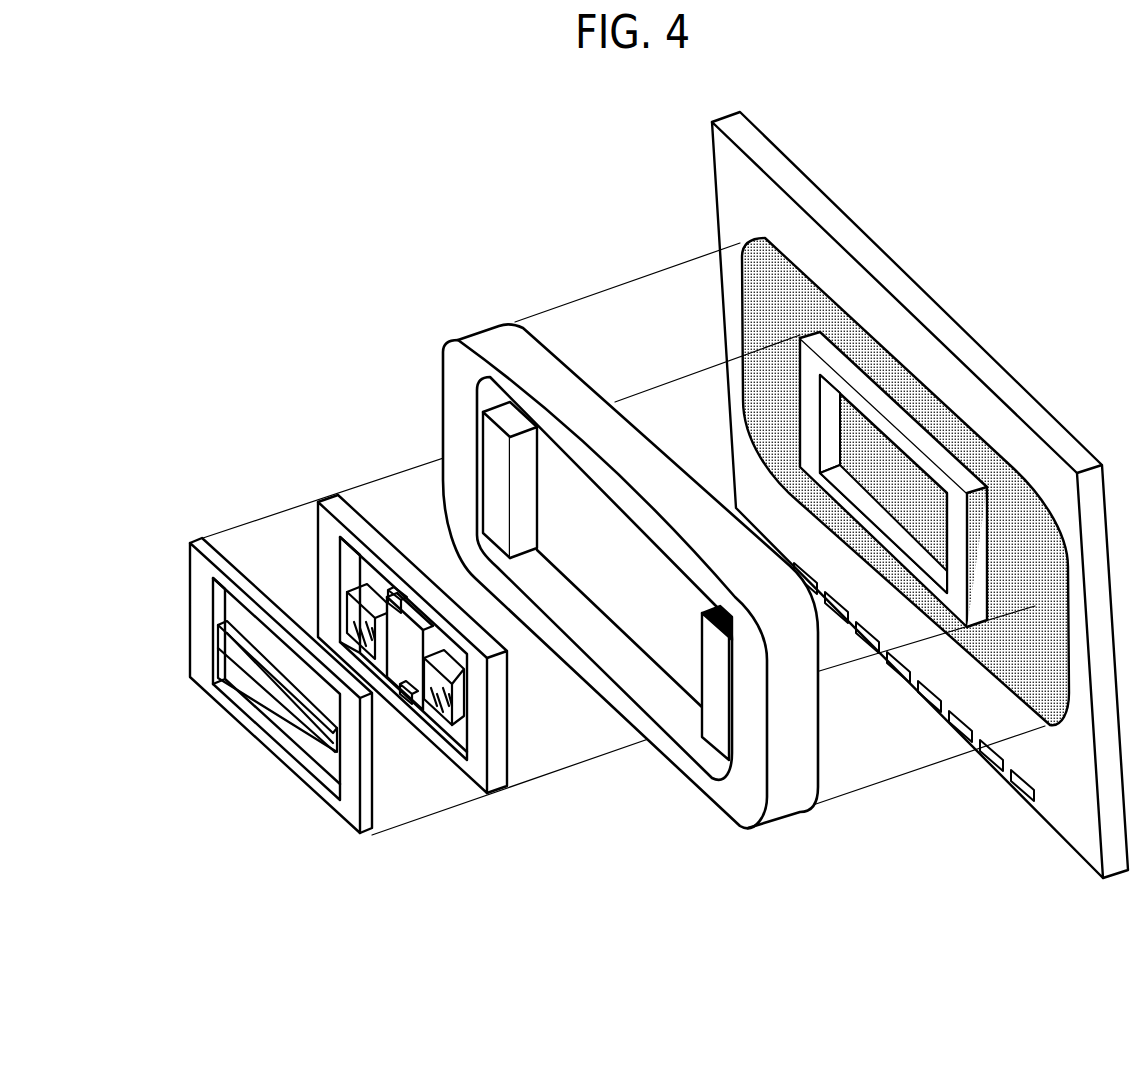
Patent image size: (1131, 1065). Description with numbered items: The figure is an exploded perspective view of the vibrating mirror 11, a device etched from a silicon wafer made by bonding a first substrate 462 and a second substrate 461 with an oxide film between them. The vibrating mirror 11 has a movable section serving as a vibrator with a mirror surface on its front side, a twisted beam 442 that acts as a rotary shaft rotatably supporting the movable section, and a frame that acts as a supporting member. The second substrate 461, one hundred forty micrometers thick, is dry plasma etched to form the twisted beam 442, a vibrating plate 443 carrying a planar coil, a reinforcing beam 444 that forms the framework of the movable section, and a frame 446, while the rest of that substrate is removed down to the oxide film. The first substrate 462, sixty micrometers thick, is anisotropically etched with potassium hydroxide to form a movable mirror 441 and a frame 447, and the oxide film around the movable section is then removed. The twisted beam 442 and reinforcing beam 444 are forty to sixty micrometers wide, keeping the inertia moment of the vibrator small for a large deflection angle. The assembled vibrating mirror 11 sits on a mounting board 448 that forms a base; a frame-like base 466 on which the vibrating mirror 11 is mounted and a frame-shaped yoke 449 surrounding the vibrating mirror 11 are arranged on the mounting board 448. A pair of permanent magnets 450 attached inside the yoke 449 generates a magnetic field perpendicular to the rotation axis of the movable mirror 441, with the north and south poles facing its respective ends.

The vibrating mirror 11 is at (598, 124).
The movable mirror 441 is at (270, 682).
The twisted beam 442 is at (388, 596).
The vibrating plate 443 is at (412, 638).
The reinforcing beam 444 is at (345, 592).
The frame 446 is at (475, 738).
The frame 447 is at (202, 630).
The mounting board 448 is at (1042, 462).
The yoke 449 is at (500, 333).
The permanent magnets 450 is at (526, 523).
The second substrate 461 is at (335, 503).
The first substrate 462 is at (198, 543).
The frame-like base 466 is at (917, 442).